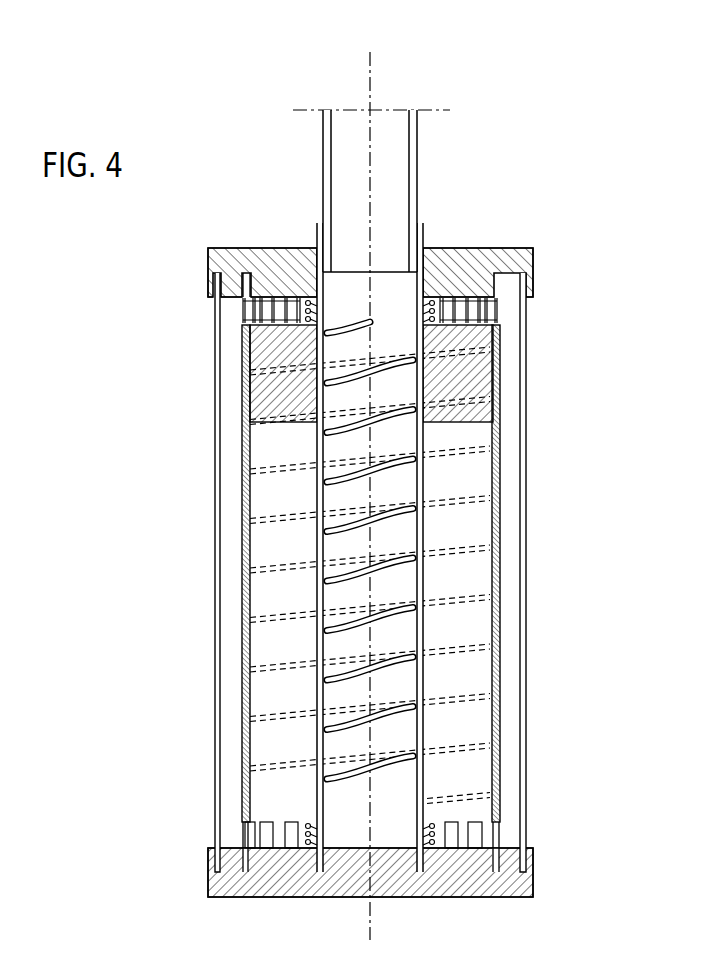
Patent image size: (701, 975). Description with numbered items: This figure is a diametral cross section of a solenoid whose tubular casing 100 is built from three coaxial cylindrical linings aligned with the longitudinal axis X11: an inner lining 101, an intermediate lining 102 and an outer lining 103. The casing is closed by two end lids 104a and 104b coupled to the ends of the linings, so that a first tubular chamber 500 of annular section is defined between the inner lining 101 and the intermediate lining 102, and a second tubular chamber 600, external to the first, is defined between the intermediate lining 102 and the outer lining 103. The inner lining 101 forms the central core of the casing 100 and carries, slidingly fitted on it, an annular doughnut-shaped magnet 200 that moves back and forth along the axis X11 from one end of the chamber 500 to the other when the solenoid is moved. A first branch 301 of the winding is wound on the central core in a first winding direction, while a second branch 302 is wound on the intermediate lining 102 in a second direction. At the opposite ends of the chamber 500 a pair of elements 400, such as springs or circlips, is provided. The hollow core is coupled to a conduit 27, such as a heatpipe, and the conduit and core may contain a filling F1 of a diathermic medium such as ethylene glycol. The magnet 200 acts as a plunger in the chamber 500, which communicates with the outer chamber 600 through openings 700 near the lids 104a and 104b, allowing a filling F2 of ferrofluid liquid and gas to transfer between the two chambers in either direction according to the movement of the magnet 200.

The conduit 27 is at (323, 140).
The casing 100 is at (545, 240).
The inner lining 101 is at (318, 695).
The intermediate lining 102 is at (245, 603).
The outer lining 103 is at (215, 435).
The end lid 104a is at (262, 248).
The end lid 104b is at (280, 883).
The magnet 200 is at (475, 372).
The first branch of the winding 301 is at (347, 776).
The second branch of the winding 302 is at (270, 472).
The elements 400 is at (438, 306).
The first tubular chamber 500 is at (452, 519).
The second tubular chamber 600 is at (232, 405).
The openings 700 is at (472, 307).
The filling of diathermic medium F1 is at (392, 200).
The filling of ferrofluid liquid and gas F2 is at (453, 672).
The longitudinal axis X11 is at (372, 92).